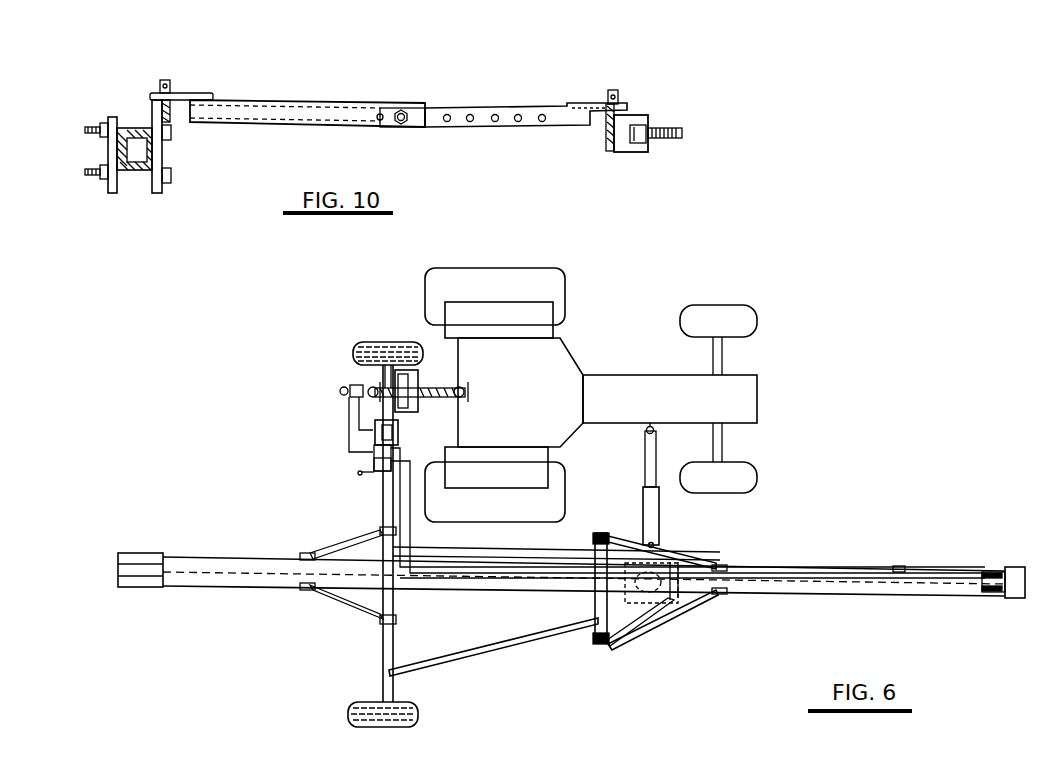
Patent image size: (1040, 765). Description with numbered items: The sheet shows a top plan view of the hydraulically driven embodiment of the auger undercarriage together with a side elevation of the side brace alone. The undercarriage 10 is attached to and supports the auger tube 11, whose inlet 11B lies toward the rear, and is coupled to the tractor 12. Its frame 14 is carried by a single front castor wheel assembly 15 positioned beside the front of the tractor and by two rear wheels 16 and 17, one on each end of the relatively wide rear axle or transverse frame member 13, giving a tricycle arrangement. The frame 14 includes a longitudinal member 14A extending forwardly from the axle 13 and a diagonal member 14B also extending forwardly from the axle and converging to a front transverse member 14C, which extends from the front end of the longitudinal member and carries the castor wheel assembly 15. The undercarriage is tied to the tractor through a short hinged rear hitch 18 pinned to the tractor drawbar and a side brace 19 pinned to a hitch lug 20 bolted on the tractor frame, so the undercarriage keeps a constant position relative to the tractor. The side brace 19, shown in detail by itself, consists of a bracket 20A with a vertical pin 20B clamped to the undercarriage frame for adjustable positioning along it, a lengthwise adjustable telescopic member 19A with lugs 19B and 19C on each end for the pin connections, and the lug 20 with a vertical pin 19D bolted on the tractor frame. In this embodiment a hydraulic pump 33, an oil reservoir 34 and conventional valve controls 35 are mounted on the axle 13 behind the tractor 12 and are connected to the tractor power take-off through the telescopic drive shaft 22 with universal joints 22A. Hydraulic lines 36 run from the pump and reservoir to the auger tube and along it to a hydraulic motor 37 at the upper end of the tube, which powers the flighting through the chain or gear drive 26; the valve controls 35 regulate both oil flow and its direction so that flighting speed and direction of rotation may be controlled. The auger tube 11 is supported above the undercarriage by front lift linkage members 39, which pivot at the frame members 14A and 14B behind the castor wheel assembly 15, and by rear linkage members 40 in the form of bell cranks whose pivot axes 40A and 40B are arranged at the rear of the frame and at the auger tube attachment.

In FIG. 6, the undercarriage assembly 10 is at (536, 652).
In FIG. 6, the auger tube 11 is at (936, 592).
In FIG. 6, the auger inlet 11B is at (143, 586).
In FIG. 6, the tractor 12 is at (740, 380).
In FIG. 6, the rear axle or transverse frame member 13 is at (394, 594).
In FIG. 6, the frame 14 is at (567, 589).
In FIG. 10, the longitudinal member 14A is at (140, 157).
In FIG. 6, the longitudinal member 14A is at (495, 557).
In FIG. 6, the diagonal member 14B is at (493, 644).
In FIG. 6, the front transverse member 14C is at (677, 552).
In FIG. 6, the front castor wheel assembly 15 is at (645, 615).
In FIG. 6, the rear wheel 16 is at (386, 342).
In FIG. 6, the rear wheel 17 is at (350, 712).
In FIG. 6, the hinged rear hitch 18 is at (430, 388).
In FIG. 10, the side brace 19 is at (393, 133).
In FIG. 6, the side brace 19 is at (642, 494).
In FIG. 10, the telescopic member 19A is at (425, 103).
In FIG. 10, the lug 19B is at (203, 93).
In FIG. 10, the lug 19C is at (590, 104).
In FIG. 10, the vertical pin 19D is at (613, 90).
In FIG. 10, the hitch lug 20 is at (645, 116).
In FIG. 6, the hitch lug 20 is at (646, 431).
In FIG. 10, the bracket 20A is at (172, 190).
In FIG. 10, the vertical pin 20B is at (166, 80).
In FIG. 6, the telescopic drive shaft 22 is at (410, 398).
In FIG. 6, the universal joints 22A is at (369, 388).
In FIG. 6, the chain or gear drive assembly 26 is at (1018, 598).
In FIG. 6, the hydraulic pump 33 is at (342, 391).
In FIG. 6, the oil reservoir 34 is at (398, 432).
In FIG. 6, the valve controls 35 is at (373, 465).
In FIG. 6, the hydraulic lines 36 is at (408, 522).
In FIG. 6, the hydraulic motor 37 is at (994, 572).
In FIG. 6, the front lift linkage 39 is at (672, 612).
In FIG. 6, the rear linkage members 40 is at (350, 603).
In FIG. 6, the pivot axis 40A is at (394, 622).
In FIG. 6, the pivot axis 40B is at (303, 589).